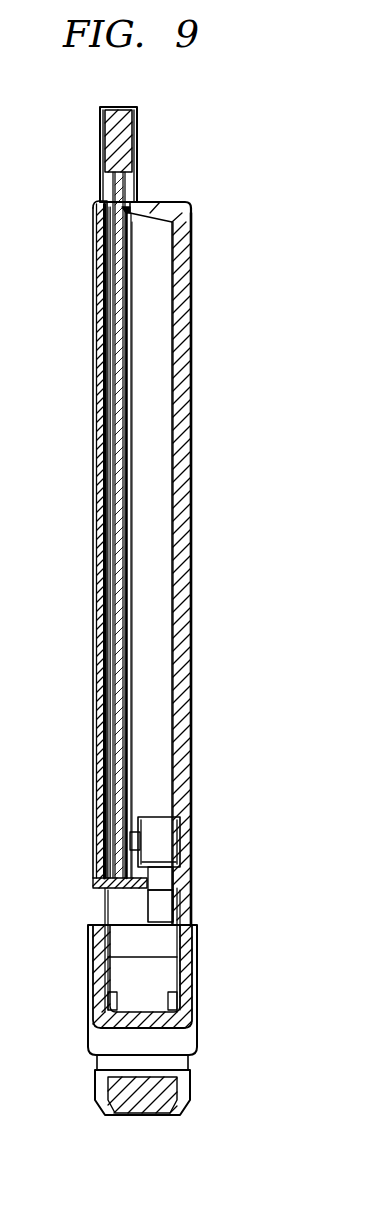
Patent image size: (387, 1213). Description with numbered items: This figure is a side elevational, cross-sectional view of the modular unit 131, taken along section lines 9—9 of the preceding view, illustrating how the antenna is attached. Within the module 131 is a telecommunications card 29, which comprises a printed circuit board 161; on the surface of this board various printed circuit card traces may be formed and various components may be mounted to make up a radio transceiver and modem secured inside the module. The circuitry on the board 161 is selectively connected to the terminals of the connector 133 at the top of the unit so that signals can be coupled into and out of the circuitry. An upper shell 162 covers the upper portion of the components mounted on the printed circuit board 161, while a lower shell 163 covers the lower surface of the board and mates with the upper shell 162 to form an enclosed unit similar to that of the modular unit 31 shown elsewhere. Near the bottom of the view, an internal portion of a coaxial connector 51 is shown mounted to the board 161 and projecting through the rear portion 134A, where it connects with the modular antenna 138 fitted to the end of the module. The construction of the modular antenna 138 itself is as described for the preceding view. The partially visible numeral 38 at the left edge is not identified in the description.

The connector 133 is at (125, 103).
The modular unit 131 is at (176, 165).
The upper shell 162 is at (182, 590).
The printed circuit board 161 is at (132, 523).
The lower shell 163 is at (100, 438).
The modular unit 31 is at (54, 542).
The section lines 9— 9 is at (55, 542).
The telecommunications card 29 is at (124, 388).
The coaxial connector 51 is at (152, 816).
The rear portion 134A is at (122, 889).
The lower housing 38 is at (98, 990).
The modular antenna 138 is at (72, 1072).